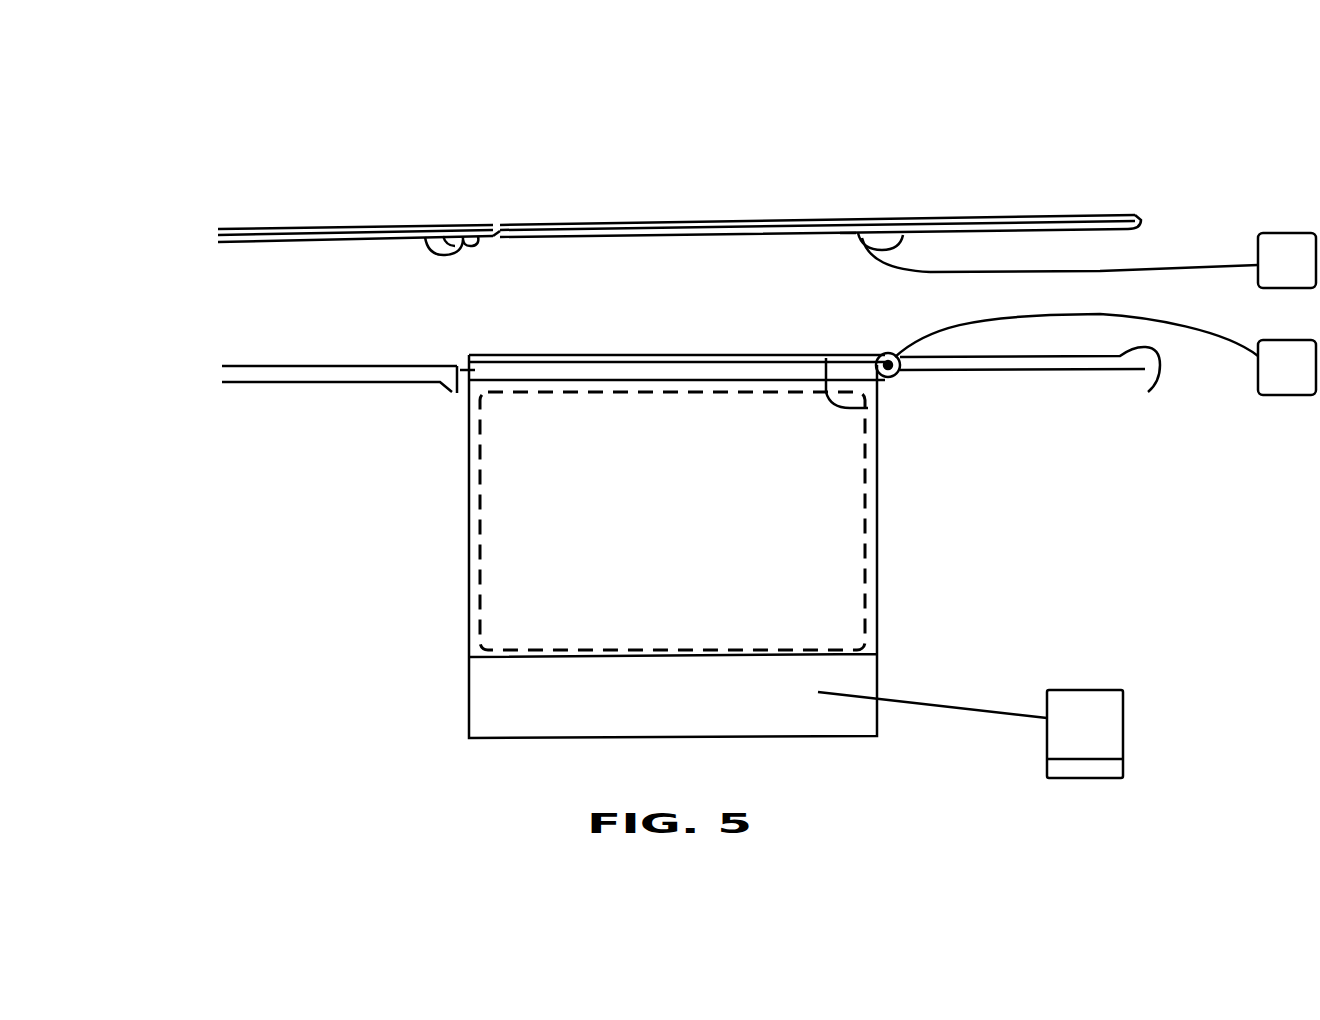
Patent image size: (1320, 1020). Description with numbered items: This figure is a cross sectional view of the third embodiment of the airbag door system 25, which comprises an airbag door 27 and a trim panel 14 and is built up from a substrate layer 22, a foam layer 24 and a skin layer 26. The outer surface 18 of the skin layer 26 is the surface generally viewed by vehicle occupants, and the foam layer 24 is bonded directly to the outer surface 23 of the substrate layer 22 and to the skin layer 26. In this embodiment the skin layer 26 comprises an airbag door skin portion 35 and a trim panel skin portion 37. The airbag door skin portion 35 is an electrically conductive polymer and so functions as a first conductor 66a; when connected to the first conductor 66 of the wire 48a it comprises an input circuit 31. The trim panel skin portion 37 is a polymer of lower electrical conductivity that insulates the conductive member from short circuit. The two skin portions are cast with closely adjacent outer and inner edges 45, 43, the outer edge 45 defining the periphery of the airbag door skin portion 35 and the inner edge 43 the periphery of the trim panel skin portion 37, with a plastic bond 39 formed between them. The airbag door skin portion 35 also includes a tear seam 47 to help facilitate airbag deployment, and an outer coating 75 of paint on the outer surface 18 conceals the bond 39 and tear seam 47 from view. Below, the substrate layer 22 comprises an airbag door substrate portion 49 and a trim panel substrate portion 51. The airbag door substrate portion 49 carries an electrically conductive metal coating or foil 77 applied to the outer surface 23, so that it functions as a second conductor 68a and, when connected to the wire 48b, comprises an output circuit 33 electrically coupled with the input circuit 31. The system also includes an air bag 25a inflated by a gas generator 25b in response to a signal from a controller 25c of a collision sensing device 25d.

The trim panel 14 is at (252, 160).
The outer surface 18 is at (248, 231).
The trim panel skin portion 37 is at (342, 234).
The plastic bond 39 is at (421, 236).
The inner edge 43 is at (448, 236).
The outer edge 45 is at (464, 238).
The tear seam 47 is at (522, 228).
The airbag door 27 is at (848, 191).
The airbag door skin portion 35 is at (692, 230).
The outer coating 75 is at (1092, 218).
The skin layer 26 is at (1146, 226).
The first conductor 66a is at (848, 230).
The first conductor of wire 66 is at (900, 273).
The wire 48a is at (1198, 263).
The input circuit 31 is at (1287, 260).
The wire 48b is at (1215, 328).
The output circuit 33 is at (1287, 367).
The airbag door system 25 is at (838, 575).
The foam layer 24 is at (245, 302).
The substrate layer 22 is at (228, 372).
The trim panel substrate portion 51 is at (360, 372).
The airbag door substrate portion 49 is at (462, 392).
The second conductor 68a is at (570, 355).
The outer surface 23 is at (1035, 386).
The electrically conductive metal coating or foil 77 is at (875, 404).
The air bag 25a is at (840, 500).
The gas generator 25b is at (865, 673).
The controller 25c is at (1112, 718).
The collision sensing device 25d is at (1117, 770).